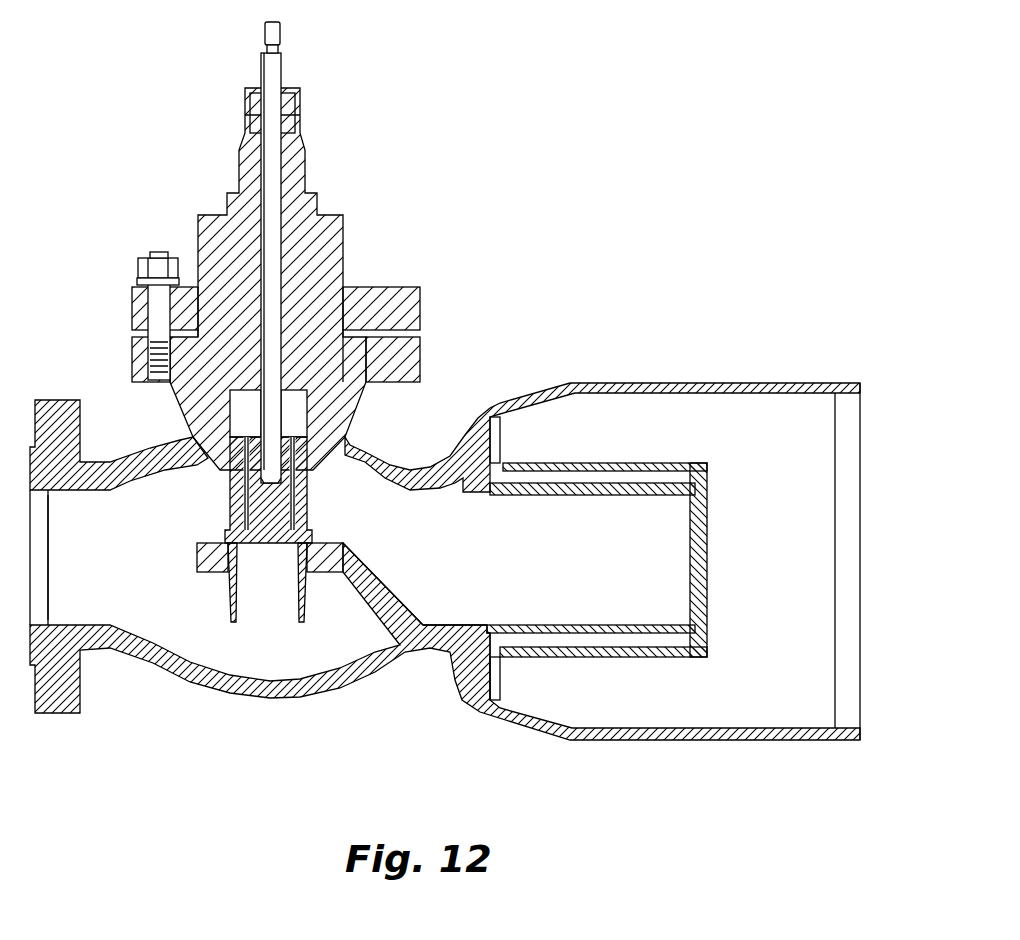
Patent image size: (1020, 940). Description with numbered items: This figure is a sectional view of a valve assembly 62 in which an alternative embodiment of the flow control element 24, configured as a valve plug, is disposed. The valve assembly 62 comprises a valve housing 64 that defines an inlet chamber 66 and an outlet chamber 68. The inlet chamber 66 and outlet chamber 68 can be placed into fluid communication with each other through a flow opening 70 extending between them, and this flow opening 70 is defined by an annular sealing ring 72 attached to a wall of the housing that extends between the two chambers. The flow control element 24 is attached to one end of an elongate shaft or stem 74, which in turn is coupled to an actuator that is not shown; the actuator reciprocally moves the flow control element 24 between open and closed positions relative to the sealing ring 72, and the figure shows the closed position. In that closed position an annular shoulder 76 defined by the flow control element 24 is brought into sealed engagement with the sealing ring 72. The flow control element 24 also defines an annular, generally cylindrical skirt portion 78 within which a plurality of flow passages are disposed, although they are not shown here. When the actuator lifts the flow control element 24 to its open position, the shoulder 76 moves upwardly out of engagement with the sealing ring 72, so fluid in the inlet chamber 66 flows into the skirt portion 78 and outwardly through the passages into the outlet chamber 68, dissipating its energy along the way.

The valve assembly 62 is at (572, 188).
The valve housing 64 is at (418, 452).
The flow control element 24 is at (337, 513).
The stem 74 is at (275, 205).
The sealing ring 72 is at (207, 568).
The inlet chamber 66 is at (190, 627).
The flow opening 70 is at (237, 548).
The skirt portion 78 is at (289, 615).
The shoulder 76 is at (337, 568).
The outlet chamber 68 is at (442, 588).